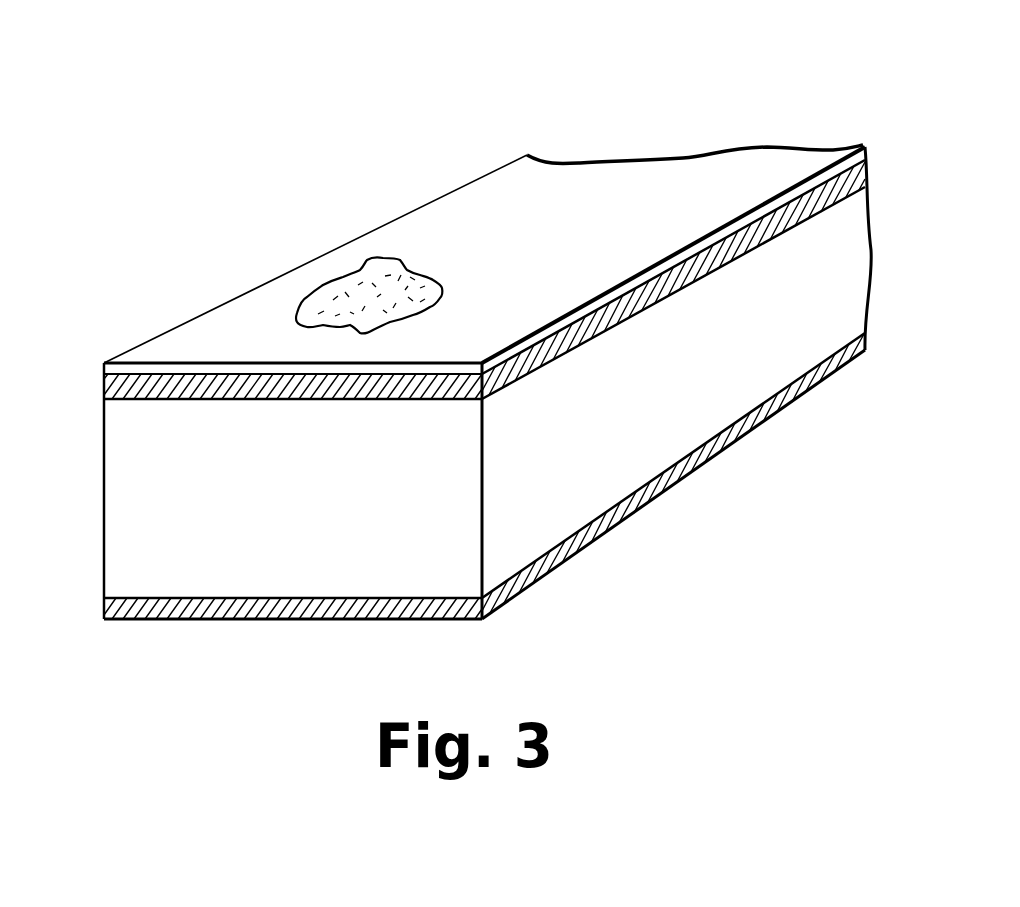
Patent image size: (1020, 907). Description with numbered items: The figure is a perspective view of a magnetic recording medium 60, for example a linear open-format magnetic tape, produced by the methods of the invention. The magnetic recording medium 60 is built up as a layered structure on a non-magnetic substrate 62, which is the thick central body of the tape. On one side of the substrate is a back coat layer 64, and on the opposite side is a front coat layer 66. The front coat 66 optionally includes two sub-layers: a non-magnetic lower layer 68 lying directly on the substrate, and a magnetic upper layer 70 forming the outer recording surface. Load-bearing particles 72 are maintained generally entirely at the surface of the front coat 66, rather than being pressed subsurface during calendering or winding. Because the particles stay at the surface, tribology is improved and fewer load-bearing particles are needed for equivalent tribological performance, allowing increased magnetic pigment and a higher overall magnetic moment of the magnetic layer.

The magnetic recording medium 60 is at (557, 117).
The non-magnetic substrate 62 is at (553, 515).
The back coat layer 64 is at (275, 619).
The front coat layer 66 is at (97, 343).
The non-magnetic lower layer 68 is at (683, 290).
The magnetic upper layer 70 is at (237, 298).
The load-bearing particles 72 is at (325, 283).